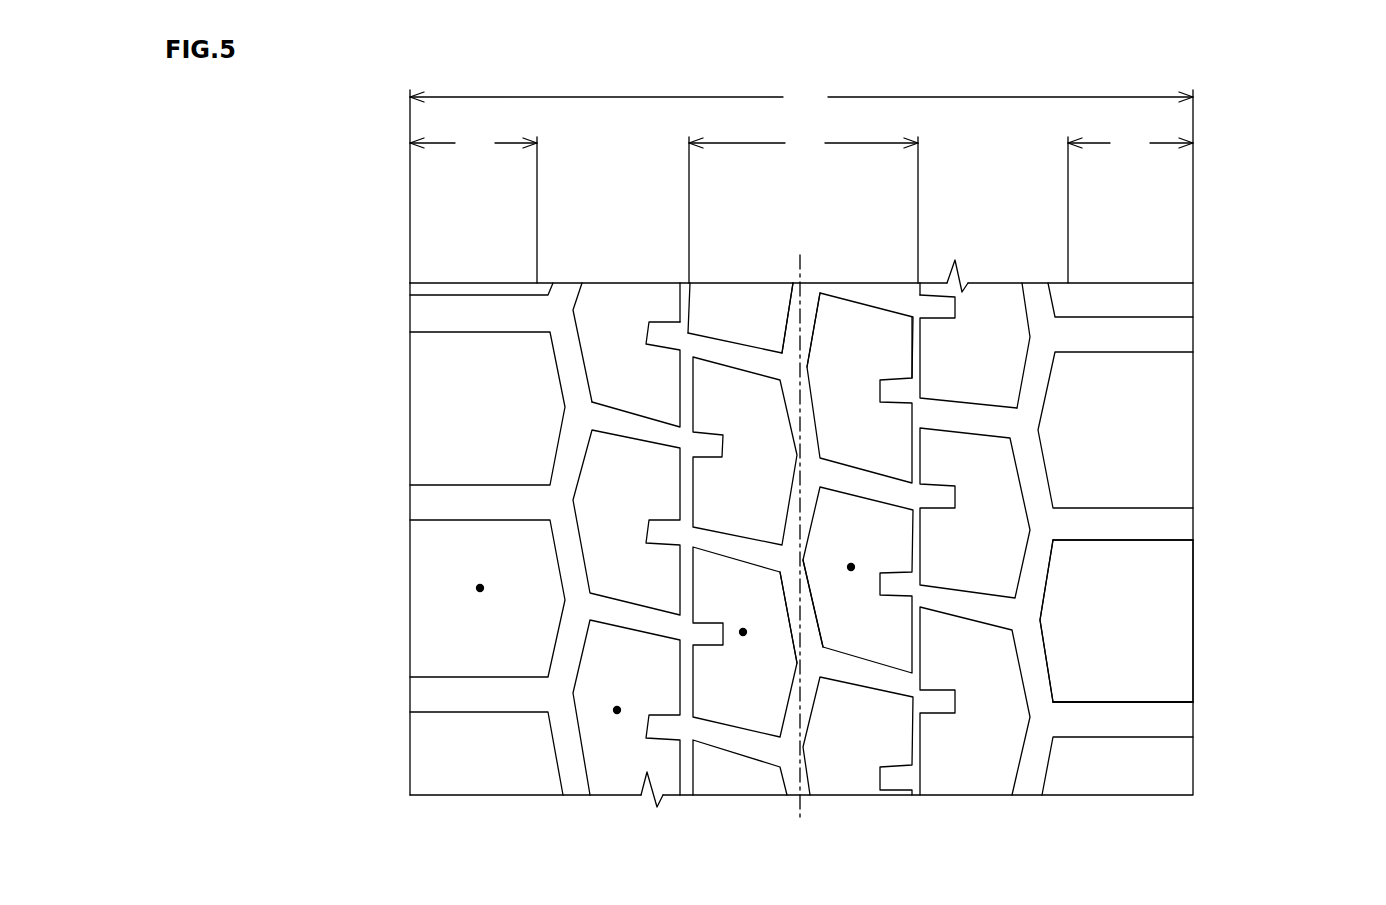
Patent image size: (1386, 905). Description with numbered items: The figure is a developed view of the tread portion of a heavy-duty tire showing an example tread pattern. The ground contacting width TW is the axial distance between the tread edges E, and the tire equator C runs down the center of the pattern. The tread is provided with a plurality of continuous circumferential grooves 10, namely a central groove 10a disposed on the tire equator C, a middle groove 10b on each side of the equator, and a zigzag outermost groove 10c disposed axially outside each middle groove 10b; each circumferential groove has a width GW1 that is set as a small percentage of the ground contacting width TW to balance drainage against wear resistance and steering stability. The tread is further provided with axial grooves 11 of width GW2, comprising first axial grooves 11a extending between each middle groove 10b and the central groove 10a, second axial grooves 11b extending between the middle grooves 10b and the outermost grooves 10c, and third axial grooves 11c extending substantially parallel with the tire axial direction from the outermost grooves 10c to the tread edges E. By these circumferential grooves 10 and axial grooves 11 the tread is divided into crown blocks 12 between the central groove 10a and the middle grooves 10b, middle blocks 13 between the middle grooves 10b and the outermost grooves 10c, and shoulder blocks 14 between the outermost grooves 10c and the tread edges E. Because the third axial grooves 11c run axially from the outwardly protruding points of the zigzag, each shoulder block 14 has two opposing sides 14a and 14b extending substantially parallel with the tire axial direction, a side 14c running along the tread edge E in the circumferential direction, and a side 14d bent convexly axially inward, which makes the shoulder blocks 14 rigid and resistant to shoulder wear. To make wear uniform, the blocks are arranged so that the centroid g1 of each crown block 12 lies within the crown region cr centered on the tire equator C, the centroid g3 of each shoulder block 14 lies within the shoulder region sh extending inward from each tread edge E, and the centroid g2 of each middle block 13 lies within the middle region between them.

The continuous circumferential grooves 10 is at (801, 269).
The central circumferential groove 10a is at (820, 292).
The middle circumferential groove 10b is at (700, 292).
The outermost circumferential groove 10c is at (560, 293).
The axial grooves 11 is at (807, 546).
The first axial grooves 11a is at (734, 742).
The second axial grooves 11b is at (627, 622).
The third axial grooves 11c is at (487, 695).
The crown blocks 12 is at (722, 492).
The middle blocks 13 is at (621, 292).
The shoulder blocks 14 is at (458, 353).
The side of shoulder block 14a is at (1197, 538).
The side of shoulder block 14b is at (1197, 703).
The shoulder block outer edge 14c is at (1197, 587).
The side bent convexly axially inward 14d is at (1045, 670).
The ground contacting width TW is at (801, 183).
The shoulder region sh is at (801, 206).
The crown region cr is at (803, 206).
The tire equator C is at (801, 522).
The tread edges E is at (405, 350).
The groove width of circumferential groove GW1 is at (615, 353).
The groove width of axial groove GW2 is at (1092, 770).
The centroid of crown block g1 is at (741, 634).
The centroid of middle block g2 is at (615, 712).
The centroid of shoulder block g3 is at (480, 590).